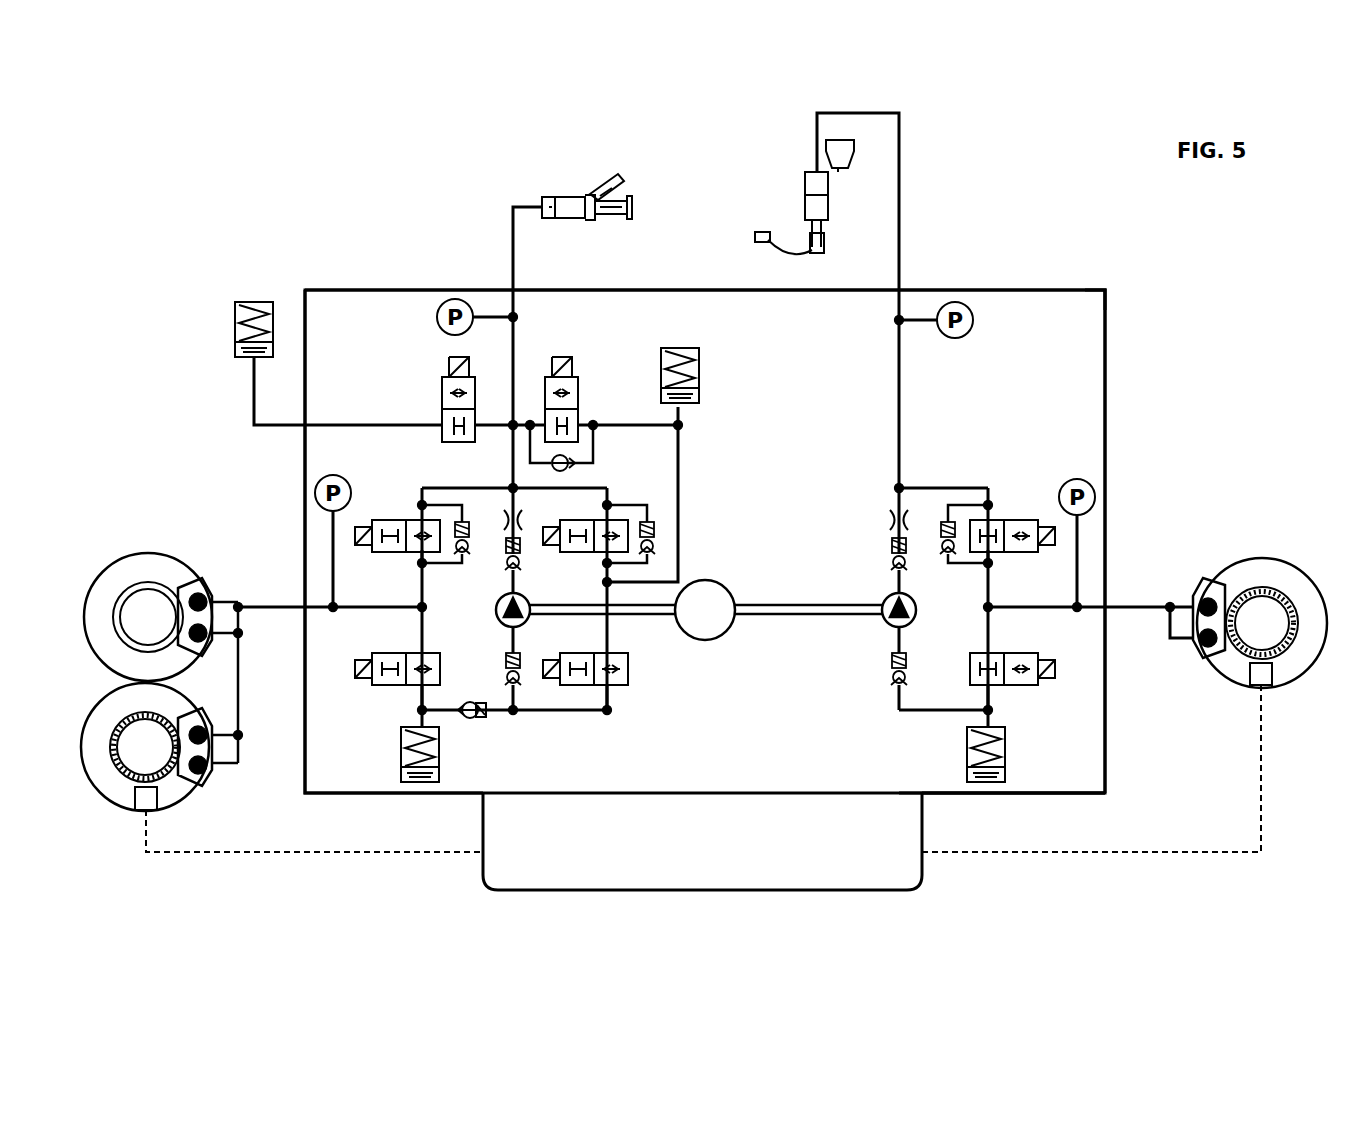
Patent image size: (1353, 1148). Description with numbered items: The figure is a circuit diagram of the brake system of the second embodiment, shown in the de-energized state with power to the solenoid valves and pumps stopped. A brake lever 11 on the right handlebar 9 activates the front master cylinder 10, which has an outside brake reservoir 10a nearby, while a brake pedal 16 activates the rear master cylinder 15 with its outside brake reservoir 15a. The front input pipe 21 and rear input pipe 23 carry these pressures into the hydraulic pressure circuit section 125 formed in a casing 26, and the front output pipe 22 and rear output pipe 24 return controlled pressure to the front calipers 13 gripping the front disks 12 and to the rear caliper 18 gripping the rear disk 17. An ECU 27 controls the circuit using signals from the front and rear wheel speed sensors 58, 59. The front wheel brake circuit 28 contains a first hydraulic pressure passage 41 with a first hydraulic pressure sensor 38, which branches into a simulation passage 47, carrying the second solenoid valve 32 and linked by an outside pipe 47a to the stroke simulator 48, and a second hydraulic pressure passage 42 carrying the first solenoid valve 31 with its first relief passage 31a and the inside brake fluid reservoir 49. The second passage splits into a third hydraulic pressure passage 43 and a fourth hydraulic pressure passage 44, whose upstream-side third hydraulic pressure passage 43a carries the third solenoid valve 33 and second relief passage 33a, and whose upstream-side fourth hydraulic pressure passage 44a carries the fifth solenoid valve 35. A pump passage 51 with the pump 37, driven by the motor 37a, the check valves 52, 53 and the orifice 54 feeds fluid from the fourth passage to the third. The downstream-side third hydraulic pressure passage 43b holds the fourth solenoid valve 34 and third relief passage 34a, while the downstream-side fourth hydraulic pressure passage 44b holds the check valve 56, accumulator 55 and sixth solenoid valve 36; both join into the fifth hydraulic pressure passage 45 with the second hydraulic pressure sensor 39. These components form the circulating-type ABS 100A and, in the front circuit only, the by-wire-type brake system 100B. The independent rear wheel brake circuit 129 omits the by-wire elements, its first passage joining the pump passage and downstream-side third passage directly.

The handlebar 9 is at (617, 220).
The front master cylinder 10 is at (560, 196).
The outside brake reservoir 10a is at (613, 207).
The brake lever 11 is at (604, 184).
The front disk 12 is at (120, 568).
The front caliper 13 is at (214, 586).
The rear master cylinder 15 is at (806, 200).
The outside brake reservoir 15a is at (830, 157).
The brake pedal 16 is at (790, 240).
The rear disk 17 is at (1263, 562).
The rear caliper 18 is at (1200, 660).
The front input pipe 21 is at (512, 234).
The front output pipe 22 is at (275, 610).
The rear input pipe 23 is at (901, 217).
The rear output pipe 24 is at (1140, 610).
The casing 26 is at (1085, 289).
The ECU 27 is at (924, 870).
The front wheel brake circuit 28 is at (390, 362).
The first solenoid valve 31 is at (578, 387).
The first relief passage 31a is at (530, 464).
The second solenoid valve 32 is at (442, 399).
The third solenoid valve 33 is at (596, 553).
The second relief passage 33a is at (647, 515).
The fourth solenoid valve 34 is at (400, 553).
The third relief passage 34a is at (441, 564).
The fifth solenoid valve 35 is at (577, 647).
The sixth solenoid valve 36 is at (400, 654).
The pump 37 is at (495, 608).
The motor 37a is at (705, 641).
The first hydraulic pressure sensor 38 is at (437, 318).
The second hydraulic pressure sensor 39 is at (333, 475).
The first hydraulic pressure passage 41 is at (514, 341).
The second hydraulic pressure passage 42 is at (632, 424).
The third hydraulic pressure passage 43 is at (705, 488).
The upstream-side third hydraulic pressure passage 43a is at (598, 488).
The downstream-side third hydraulic pressure passage 43b is at (432, 488).
The fourth hydraulic pressure passage 44 is at (705, 710).
The upstream-side fourth hydraulic pressure passage 44a is at (580, 712).
The downstream-side fourth hydraulic pressure passage 44b is at (414, 706).
The fifth hydraulic pressure passage 45 is at (334, 610).
The simulation passage 47 is at (336, 424).
The outside pipe 47a is at (252, 396).
The stroke simulator 48 is at (235, 318).
The inside brake fluid reservoir 49 is at (663, 360).
The pump passage 51 is at (511, 640).
The check valve 52 is at (504, 673).
The check valve 53 is at (470, 548).
The orifice 54 is at (521, 518).
The accumulator 55 is at (400, 773).
The check valve 56 is at (473, 719).
The front wheel speed sensor 58 is at (134, 808).
The rear wheel speed sensor 59 is at (1274, 682).
The circulating-type ABS 100A is at (312, 793).
The by-wire-type brake system 100B is at (300, 258).
The hydraulic pressure circuit section 125 is at (1030, 285).
The rear wheel brake circuit 129 is at (1025, 372).